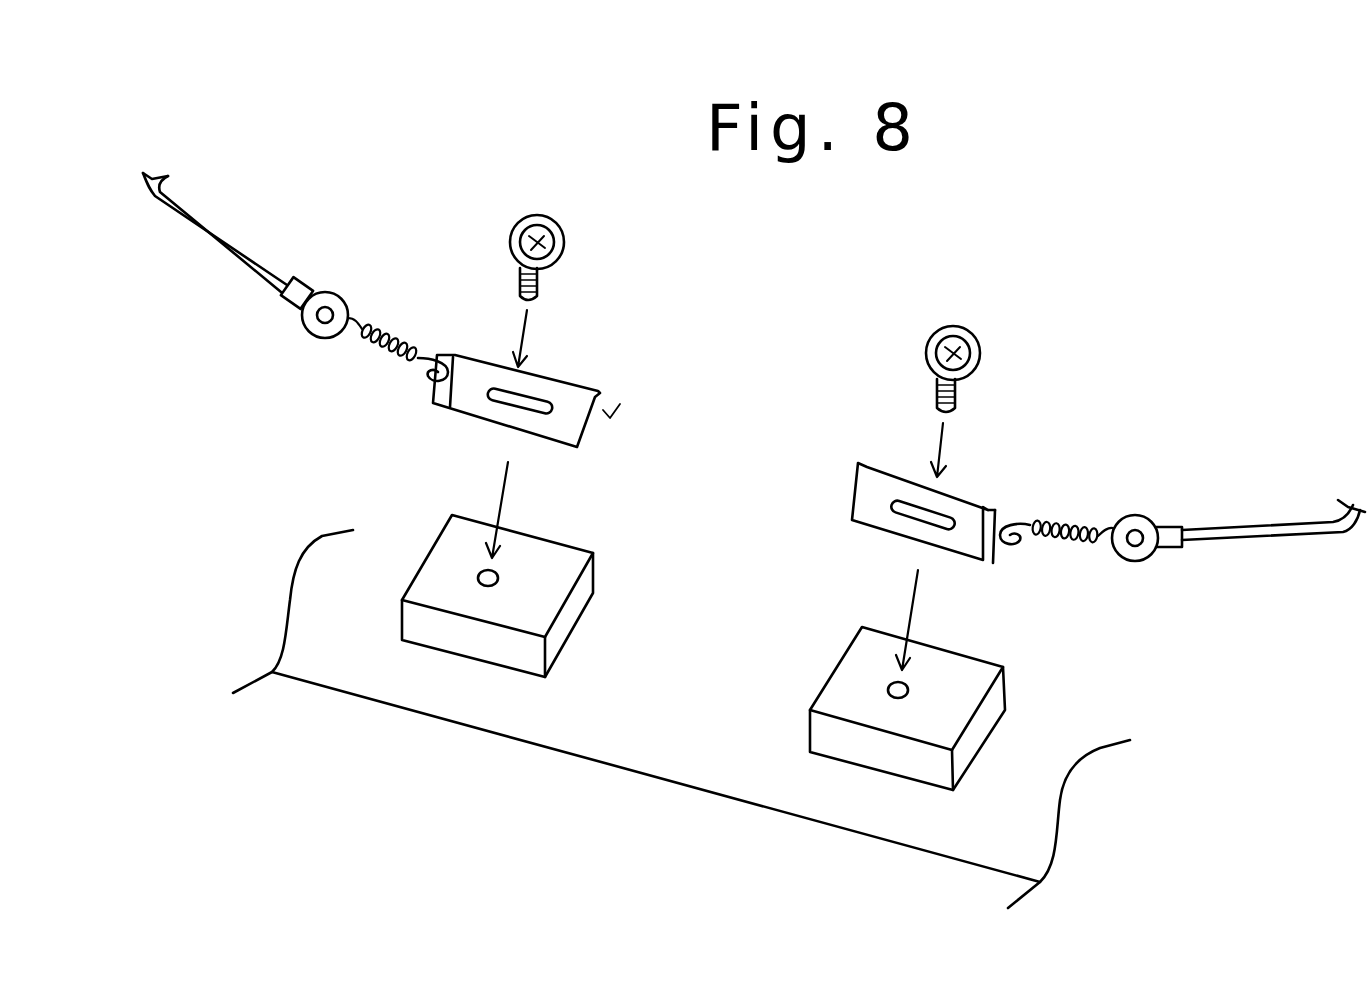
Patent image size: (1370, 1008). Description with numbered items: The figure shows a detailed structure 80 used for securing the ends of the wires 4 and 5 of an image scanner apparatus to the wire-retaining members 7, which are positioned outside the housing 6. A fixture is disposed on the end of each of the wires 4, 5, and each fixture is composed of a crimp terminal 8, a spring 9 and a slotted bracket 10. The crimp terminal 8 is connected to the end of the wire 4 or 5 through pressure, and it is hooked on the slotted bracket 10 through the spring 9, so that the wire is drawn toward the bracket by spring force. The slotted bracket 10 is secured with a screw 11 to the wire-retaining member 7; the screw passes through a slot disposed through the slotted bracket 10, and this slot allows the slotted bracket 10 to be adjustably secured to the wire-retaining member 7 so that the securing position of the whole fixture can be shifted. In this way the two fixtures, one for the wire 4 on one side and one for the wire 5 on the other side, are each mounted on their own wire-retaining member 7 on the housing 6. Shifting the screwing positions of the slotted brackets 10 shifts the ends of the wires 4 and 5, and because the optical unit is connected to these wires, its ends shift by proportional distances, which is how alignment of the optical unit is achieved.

The detailed structure 80 is at (281, 67).
The wire 4 is at (222, 240).
The wire 5 is at (1265, 527).
The housing 6 is at (660, 748).
The wire-retaining member 7 is at (420, 563).
The crimp terminal 8 is at (302, 286).
The spring 9 is at (384, 328).
The slotted bracket 10 is at (565, 385).
The screw 11 is at (553, 216).